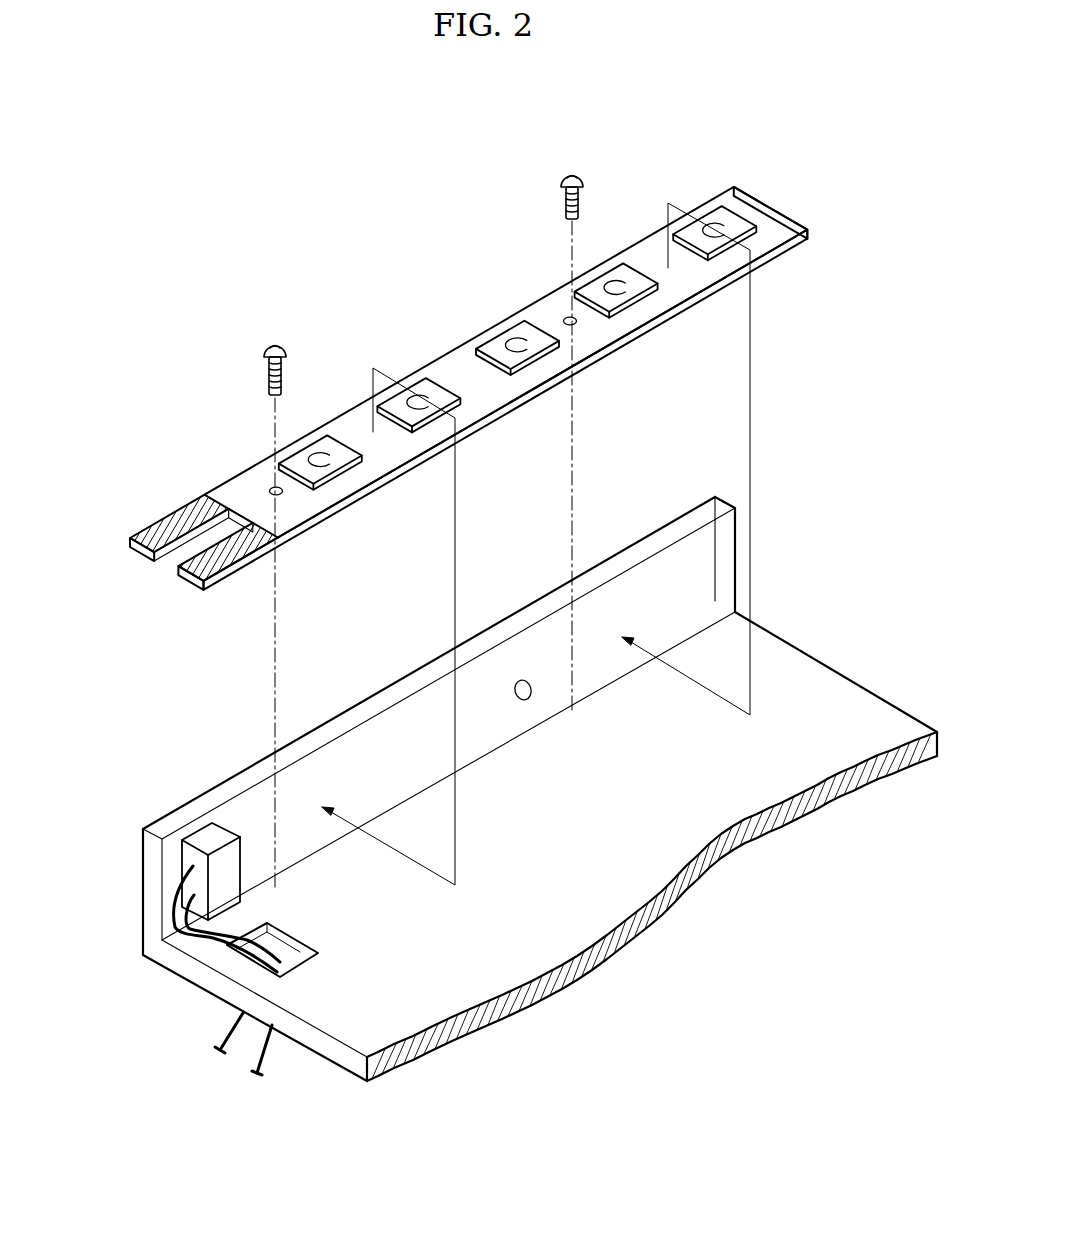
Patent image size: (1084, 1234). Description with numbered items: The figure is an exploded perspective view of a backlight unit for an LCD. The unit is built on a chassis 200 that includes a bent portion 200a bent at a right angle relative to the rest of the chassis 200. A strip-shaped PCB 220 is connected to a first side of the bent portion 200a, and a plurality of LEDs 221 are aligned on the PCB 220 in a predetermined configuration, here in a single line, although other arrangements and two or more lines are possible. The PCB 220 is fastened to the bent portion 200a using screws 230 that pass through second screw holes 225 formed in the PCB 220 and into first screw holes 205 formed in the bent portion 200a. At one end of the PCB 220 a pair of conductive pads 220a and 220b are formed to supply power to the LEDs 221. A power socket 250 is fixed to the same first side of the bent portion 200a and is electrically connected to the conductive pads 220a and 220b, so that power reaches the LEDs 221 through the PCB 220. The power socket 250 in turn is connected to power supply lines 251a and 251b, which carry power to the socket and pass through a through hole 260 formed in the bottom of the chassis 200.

The chassis 200 is at (540, 789).
The bent portion 200a is at (723, 556).
The first screw hole 205 is at (529, 702).
The PCB 220 is at (438, 373).
The conductive pad 220a is at (150, 528).
The conductive pad 220b is at (183, 557).
The LED 221 is at (508, 343).
The second screw hole 225 is at (268, 488).
The screw 230 is at (290, 345).
The power socket 250 is at (208, 834).
The power supply line 251a is at (233, 1030).
The power supply line 251b is at (265, 1076).
The through hole 260 is at (305, 968).